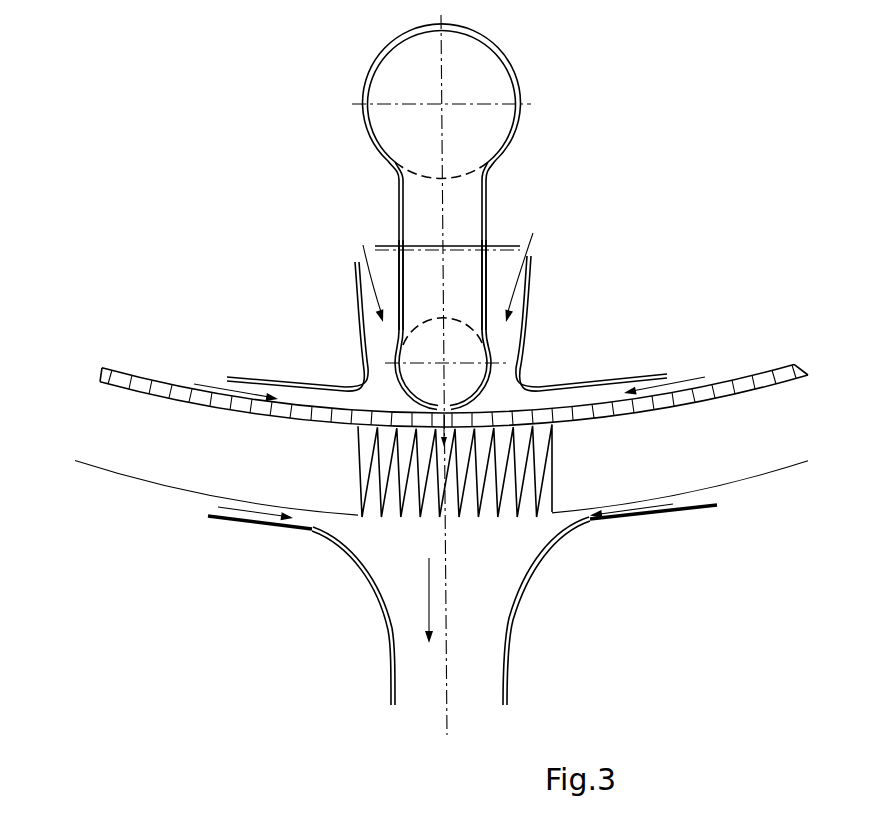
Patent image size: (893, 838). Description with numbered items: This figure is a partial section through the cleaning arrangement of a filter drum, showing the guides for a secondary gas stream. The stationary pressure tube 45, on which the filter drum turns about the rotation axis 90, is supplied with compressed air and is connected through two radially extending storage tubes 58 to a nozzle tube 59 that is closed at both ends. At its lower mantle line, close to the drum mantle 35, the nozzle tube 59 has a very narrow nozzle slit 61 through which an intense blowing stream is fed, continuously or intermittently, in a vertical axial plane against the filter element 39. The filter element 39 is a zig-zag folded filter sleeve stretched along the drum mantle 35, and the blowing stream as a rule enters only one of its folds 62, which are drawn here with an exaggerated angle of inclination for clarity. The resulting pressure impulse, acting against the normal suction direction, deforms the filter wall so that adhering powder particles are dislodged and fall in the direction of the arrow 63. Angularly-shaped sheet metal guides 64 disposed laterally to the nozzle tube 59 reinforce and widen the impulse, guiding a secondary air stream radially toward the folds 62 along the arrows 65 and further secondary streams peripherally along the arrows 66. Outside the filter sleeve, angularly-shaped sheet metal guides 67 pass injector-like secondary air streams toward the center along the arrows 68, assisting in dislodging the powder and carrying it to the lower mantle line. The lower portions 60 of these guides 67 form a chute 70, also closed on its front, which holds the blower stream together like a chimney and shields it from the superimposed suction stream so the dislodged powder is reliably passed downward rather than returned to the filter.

The pressure tube 45 is at (515, 69).
The rotation axis 90 is at (440, 102).
The storage tubes 58 is at (487, 222).
The nozzle tube 59 is at (397, 372).
The nozzle slit 61 is at (449, 408).
The sheet metal guides 64 is at (527, 306).
The arrows 65 is at (465, 271).
The arrows 66 is at (450, 375).
The drum mantle 35 is at (133, 386).
The folds 62 is at (520, 462).
The filter element 39 is at (195, 496).
The arrows 68 is at (240, 517).
The sheet metal guides 67 is at (381, 597).
The lower portions 60 is at (390, 681).
The chute 70 is at (495, 681).
The arrow 63 is at (431, 638).